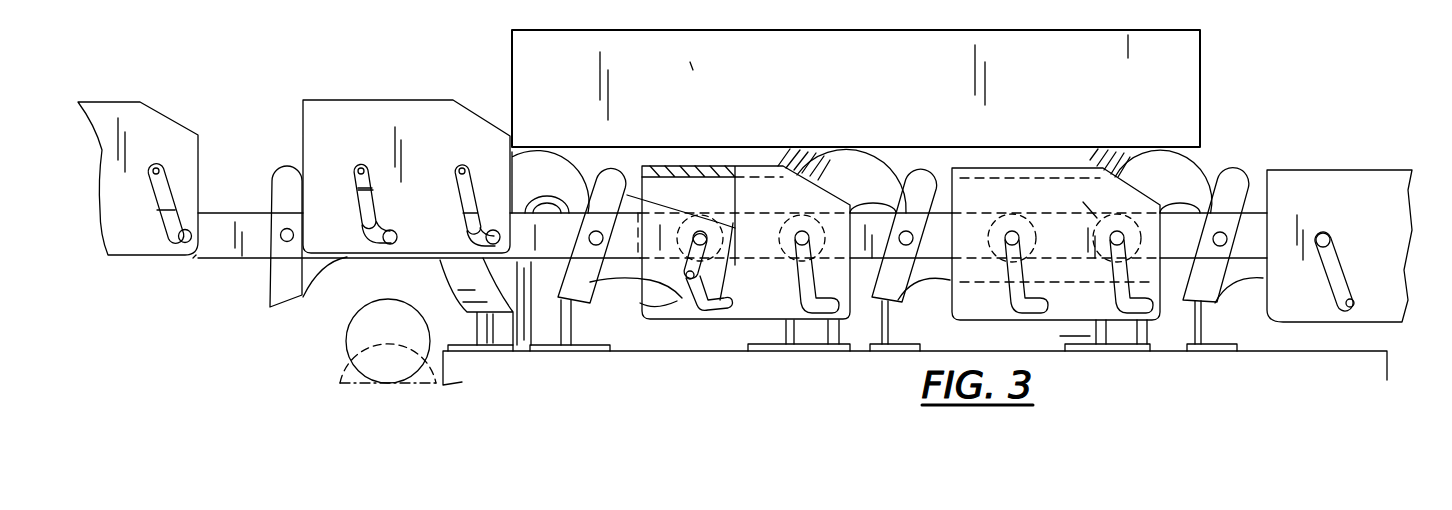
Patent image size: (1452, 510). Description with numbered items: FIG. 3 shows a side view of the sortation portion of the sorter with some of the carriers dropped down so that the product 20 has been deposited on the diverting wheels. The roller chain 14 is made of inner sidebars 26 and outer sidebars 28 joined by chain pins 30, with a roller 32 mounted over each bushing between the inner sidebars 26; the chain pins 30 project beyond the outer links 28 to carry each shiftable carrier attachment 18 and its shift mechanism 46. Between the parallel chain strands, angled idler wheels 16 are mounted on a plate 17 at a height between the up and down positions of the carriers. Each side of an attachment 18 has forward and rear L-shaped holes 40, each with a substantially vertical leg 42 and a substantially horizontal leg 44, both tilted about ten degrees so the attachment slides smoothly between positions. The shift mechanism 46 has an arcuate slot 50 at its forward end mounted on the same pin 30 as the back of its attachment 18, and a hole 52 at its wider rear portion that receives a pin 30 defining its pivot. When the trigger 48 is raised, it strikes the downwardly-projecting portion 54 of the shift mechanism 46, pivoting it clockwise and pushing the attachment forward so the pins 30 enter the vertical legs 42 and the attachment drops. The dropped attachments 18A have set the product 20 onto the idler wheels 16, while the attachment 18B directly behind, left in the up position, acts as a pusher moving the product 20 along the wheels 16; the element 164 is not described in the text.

The roller chain 14 is at (190, 262).
The idler wheels 16 is at (568, 160).
The plate 17 is at (1347, 351).
The carrier attachment 18 is at (110, 102).
The carrier attachments in down position 18A is at (700, 176).
The carrier attachment behind the product 18B is at (347, 100).
The product 20 is at (828, 72).
The inner sidebars 26 is at (214, 213).
The outer sidebars 28 is at (208, 257).
The chain pins 30 is at (180, 243).
The roller 32 is at (1075, 199).
The L-shaped holes 40 is at (160, 167).
The vertical leg 42 is at (363, 214).
The horizontal leg 44 is at (396, 234).
The shift mechanism 46 is at (287, 172).
The trigger 48 is at (346, 338).
The arcuate slot 50 is at (700, 245).
The hole 52 is at (279, 228).
The downwardly-projecting portion 54 is at (278, 310).
The base plate 164 is at (1060, 336).